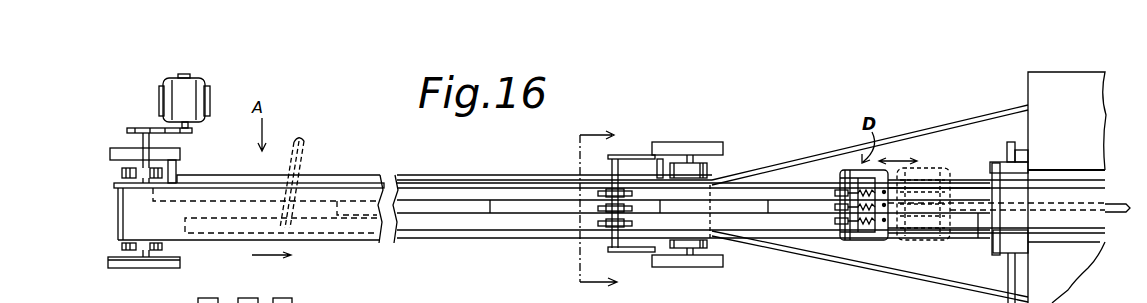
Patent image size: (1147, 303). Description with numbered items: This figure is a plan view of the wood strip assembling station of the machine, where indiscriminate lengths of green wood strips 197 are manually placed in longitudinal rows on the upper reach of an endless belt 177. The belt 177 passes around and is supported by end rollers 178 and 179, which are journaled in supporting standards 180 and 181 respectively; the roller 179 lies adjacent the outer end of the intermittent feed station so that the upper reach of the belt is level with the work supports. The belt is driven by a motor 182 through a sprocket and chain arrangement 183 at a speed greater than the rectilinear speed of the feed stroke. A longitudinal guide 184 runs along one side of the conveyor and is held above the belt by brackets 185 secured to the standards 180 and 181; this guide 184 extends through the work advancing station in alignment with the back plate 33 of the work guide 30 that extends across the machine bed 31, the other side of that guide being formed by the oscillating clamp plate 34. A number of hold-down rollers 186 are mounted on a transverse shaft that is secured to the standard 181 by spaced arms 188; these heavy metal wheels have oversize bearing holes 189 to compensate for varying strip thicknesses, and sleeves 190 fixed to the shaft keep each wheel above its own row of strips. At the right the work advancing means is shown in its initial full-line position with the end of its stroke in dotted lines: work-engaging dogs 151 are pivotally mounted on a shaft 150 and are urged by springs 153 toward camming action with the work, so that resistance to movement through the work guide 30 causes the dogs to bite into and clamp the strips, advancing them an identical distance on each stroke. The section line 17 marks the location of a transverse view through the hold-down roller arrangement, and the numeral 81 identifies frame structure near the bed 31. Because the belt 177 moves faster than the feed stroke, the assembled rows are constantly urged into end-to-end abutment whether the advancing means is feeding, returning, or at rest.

The section line 17- 17 is at (581, 209).
The work guide 30 is at (1102, 192).
The machine bed 31 is at (1068, 90).
The back plate 33 is at (1070, 172).
The clamp plate 34 is at (1090, 240).
The frame member 81 is at (1007, 292).
The shaft 150 is at (848, 222).
The work-engaging dogs 151 is at (840, 207).
The springs 153 is at (872, 232).
The endless belt 177 is at (132, 210).
The end roller 178 is at (122, 245).
The end roller 179 is at (707, 168).
The supporting standard 180 is at (180, 262).
The supporting standard 181 is at (712, 265).
The motor 182 is at (204, 86).
The sprocket and chain arrangement 183 is at (141, 120).
The longitudinal guide 184 is at (338, 183).
The brackets 185 is at (178, 168).
The hold-down rollers 186 is at (606, 213).
The arms 188 is at (628, 155).
The oversize bearing holes 189 is at (296, 302).
The sleeves 190 is at (250, 294).
The green wood strips 197 is at (437, 224).